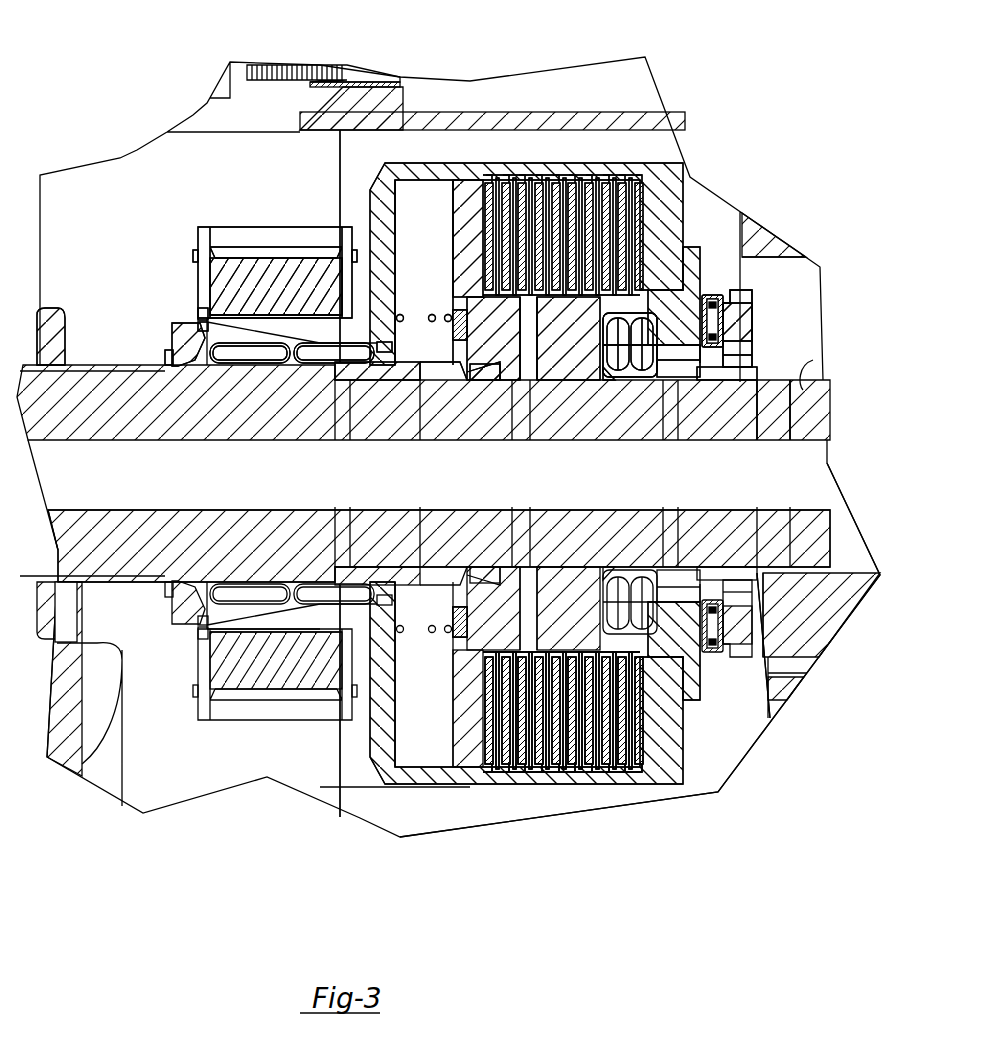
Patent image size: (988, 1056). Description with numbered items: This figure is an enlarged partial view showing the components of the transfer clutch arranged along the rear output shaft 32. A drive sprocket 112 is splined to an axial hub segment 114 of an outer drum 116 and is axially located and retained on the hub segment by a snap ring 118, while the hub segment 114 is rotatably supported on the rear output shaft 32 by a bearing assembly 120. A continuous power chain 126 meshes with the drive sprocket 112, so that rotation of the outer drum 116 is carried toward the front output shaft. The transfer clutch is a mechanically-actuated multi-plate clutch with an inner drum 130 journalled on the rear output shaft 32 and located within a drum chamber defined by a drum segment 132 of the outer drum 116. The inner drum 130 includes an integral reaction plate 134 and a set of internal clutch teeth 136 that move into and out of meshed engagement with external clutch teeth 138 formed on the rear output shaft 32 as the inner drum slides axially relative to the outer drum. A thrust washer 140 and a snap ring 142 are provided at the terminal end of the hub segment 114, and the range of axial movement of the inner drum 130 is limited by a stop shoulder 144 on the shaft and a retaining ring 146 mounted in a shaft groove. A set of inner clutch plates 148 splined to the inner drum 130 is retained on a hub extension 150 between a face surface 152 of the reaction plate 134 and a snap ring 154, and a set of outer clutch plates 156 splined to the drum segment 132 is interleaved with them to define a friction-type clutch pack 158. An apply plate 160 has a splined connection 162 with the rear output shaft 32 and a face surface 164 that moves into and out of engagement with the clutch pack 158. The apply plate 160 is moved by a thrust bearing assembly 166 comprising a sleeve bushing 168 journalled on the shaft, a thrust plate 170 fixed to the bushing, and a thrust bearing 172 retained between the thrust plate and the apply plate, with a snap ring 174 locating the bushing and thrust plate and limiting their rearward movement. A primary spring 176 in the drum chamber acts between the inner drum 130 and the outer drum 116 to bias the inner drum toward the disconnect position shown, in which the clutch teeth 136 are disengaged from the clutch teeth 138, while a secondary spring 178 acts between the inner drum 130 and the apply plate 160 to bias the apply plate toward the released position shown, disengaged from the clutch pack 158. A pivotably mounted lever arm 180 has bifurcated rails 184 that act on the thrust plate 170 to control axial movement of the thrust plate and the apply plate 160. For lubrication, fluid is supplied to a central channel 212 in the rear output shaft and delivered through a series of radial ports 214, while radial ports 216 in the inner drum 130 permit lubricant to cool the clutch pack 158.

The rear output shaft 32 is at (797, 393).
The drive sprocket 112 is at (294, 295).
The axial hub segment 114 is at (233, 330).
The outer drum 116 is at (422, 158).
The snap ring 118 is at (200, 318).
The bearing assembly 120 is at (310, 352).
The continuous power chain 126 is at (255, 238).
The inner drum 130 is at (553, 365).
The drum segment 132 is at (485, 176).
The reaction plate 134 is at (472, 223).
The internal clutch teeth 136 is at (487, 370).
The external clutch teeth 138 is at (452, 372).
The thrust washer 140 is at (173, 368).
The snap ring 142 is at (172, 366).
The stop shoulder 144 is at (420, 368).
The retaining ring 146 is at (607, 382).
The inner clutch plates 148 is at (606, 296).
The hub extension 150 is at (673, 715).
The face surface 152 is at (550, 725).
The snap ring 154 is at (466, 620).
The outer clutch plates 156 is at (605, 776).
The clutch pack 158 is at (518, 773).
The apply plate 160 is at (707, 683).
The splined connection 162 is at (680, 387).
The face surface 164 is at (640, 777).
The thrust bearing assembly 166 is at (757, 295).
The sleeve bushing 168 is at (723, 382).
The thrust plate 170 is at (745, 337).
The thrust bearing 172 is at (710, 293).
The snap ring 174 is at (770, 388).
The primary spring 176 is at (432, 316).
The secondary spring 178 is at (660, 378).
The lever arm 180 is at (815, 668).
The bifurcated rails 184 is at (797, 565).
The central channel 212 is at (210, 580).
The radial ports 214 is at (665, 425).
The radial ports 216 is at (500, 328).